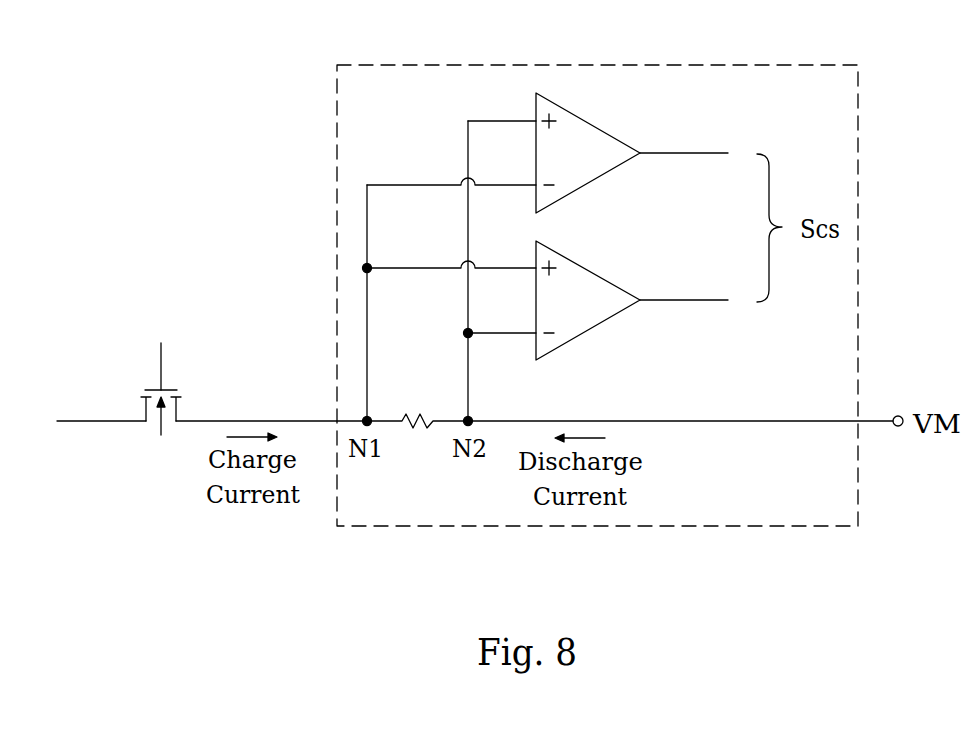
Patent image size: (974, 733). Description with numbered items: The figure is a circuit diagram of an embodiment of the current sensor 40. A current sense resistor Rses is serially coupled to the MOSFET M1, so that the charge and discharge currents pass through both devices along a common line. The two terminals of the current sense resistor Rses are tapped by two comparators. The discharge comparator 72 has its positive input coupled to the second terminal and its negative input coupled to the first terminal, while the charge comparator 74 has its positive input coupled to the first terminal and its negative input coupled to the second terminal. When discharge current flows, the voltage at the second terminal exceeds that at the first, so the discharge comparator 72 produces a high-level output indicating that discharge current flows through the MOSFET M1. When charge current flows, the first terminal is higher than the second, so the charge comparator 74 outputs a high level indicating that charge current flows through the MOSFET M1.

The current sensor 40 is at (858, 122).
The discharge comparator 72 is at (588, 118).
The charge comparator 74 is at (588, 265).
The MOSFET M1 is at (179, 389).
The current sense resistor Rses is at (417, 403).